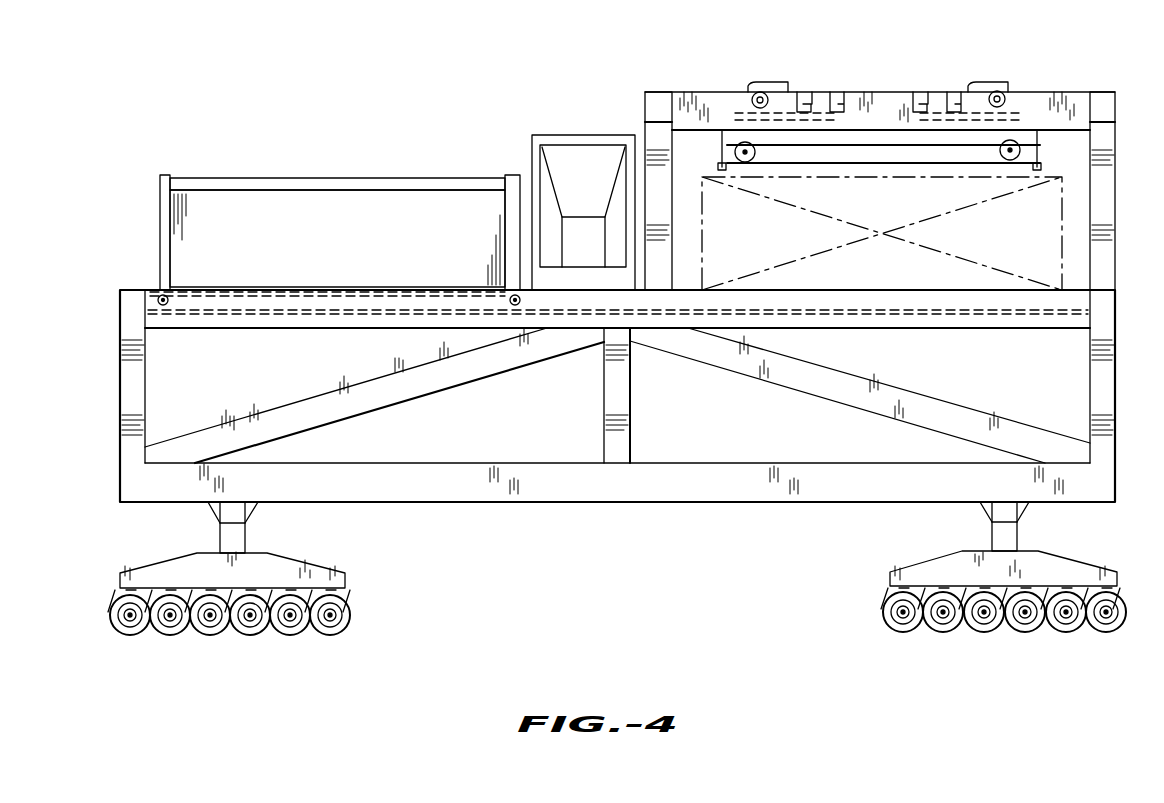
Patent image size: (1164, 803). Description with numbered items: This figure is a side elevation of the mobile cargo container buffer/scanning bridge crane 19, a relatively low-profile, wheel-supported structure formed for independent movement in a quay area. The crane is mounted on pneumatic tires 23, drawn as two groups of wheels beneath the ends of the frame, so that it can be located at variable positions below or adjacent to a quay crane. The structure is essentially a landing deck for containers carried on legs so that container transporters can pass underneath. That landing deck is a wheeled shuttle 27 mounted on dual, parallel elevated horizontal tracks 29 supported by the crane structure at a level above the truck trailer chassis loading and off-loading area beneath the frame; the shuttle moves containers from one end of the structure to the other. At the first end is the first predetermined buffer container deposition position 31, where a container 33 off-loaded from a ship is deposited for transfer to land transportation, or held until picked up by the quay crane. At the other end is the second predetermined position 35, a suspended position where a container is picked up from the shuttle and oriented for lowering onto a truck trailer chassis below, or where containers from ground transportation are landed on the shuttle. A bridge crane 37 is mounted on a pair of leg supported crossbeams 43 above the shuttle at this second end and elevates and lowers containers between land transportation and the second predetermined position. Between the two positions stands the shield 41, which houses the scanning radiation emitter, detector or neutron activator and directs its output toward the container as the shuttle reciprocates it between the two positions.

The scanning bridge crane 19 is at (637, 559).
The pneumatic tires 23 is at (350, 609).
The wheeled shuttle 27 is at (257, 297).
The elevated horizontal tracks 29 is at (978, 315).
The first predetermined buffer container deposition position 31 is at (350, 249).
The container 33 is at (252, 178).
The second predetermined position 35 is at (1028, 235).
The bridge crane 37 is at (893, 100).
The shield 41 is at (531, 163).
The leg supported crossbeams 43 is at (657, 100).